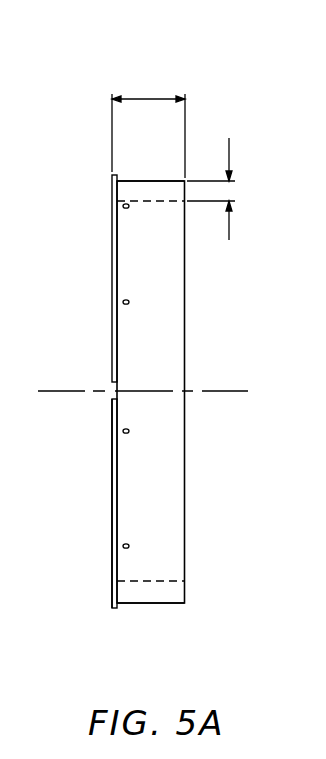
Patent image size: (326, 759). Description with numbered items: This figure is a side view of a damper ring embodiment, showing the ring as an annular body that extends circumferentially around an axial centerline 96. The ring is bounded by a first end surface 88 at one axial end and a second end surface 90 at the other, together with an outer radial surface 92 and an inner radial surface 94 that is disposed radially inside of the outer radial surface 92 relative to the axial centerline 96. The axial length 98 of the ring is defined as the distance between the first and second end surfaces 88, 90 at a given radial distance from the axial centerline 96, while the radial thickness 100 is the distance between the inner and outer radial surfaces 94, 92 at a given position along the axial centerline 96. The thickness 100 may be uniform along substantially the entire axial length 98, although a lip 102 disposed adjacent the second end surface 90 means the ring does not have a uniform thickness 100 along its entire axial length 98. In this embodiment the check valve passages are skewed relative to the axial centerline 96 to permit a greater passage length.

The first end surface 88 is at (184, 518).
The second end surface 90 is at (112, 570).
The outer radial surface 92 is at (163, 180).
The inner radial surface 94 is at (150, 202).
The axial centerline 96 is at (235, 390).
The axial length 98 is at (150, 98).
The radial thickness 100 is at (229, 153).
The lip 102 is at (112, 517).